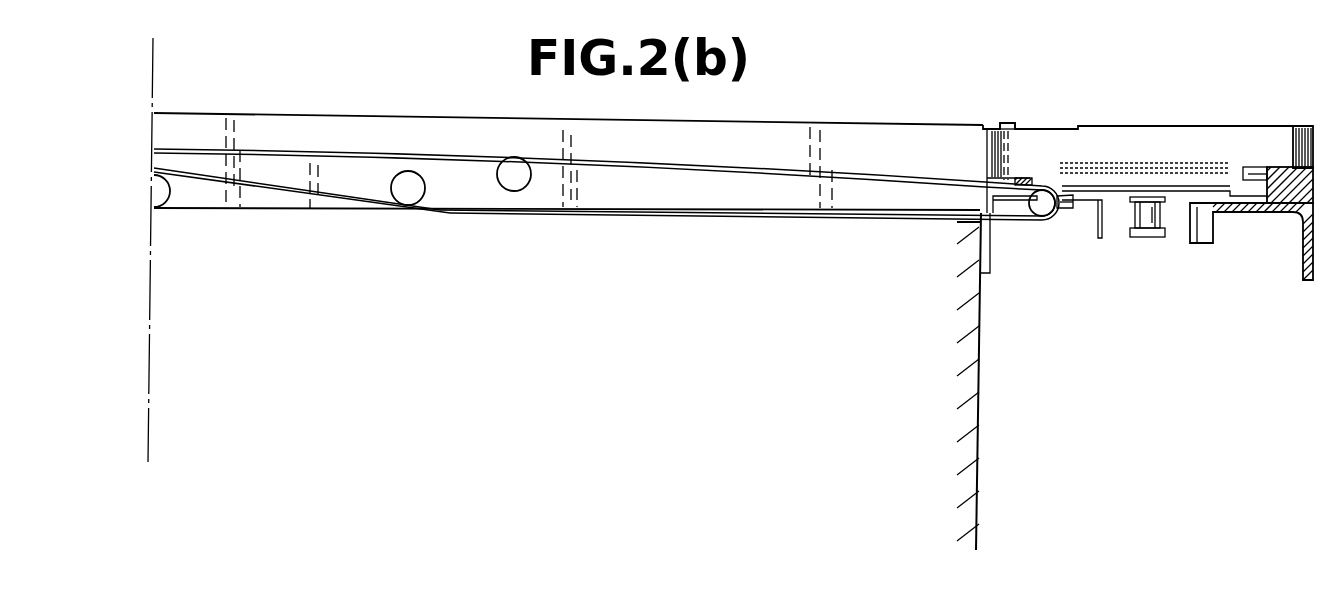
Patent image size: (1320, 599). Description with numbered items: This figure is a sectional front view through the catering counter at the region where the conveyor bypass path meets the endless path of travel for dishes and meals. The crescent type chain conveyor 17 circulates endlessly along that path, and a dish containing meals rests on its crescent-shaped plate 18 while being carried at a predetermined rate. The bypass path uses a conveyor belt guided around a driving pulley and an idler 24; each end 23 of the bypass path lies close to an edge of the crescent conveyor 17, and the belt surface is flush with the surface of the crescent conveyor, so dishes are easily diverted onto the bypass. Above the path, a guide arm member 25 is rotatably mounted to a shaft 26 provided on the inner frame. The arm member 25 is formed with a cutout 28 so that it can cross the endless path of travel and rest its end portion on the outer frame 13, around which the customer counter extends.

The outer frame 13 is at (1287, 167).
The crescent type chain conveyor 17 is at (1162, 248).
The crescent-shaped plate 18 is at (1152, 190).
The end of the bypass path of travel 23 is at (1057, 212).
The idler 24 is at (1042, 203).
The guide arm member 25 is at (1158, 140).
The shaft 26 is at (1008, 122).
The cutout 28 is at (1253, 180).